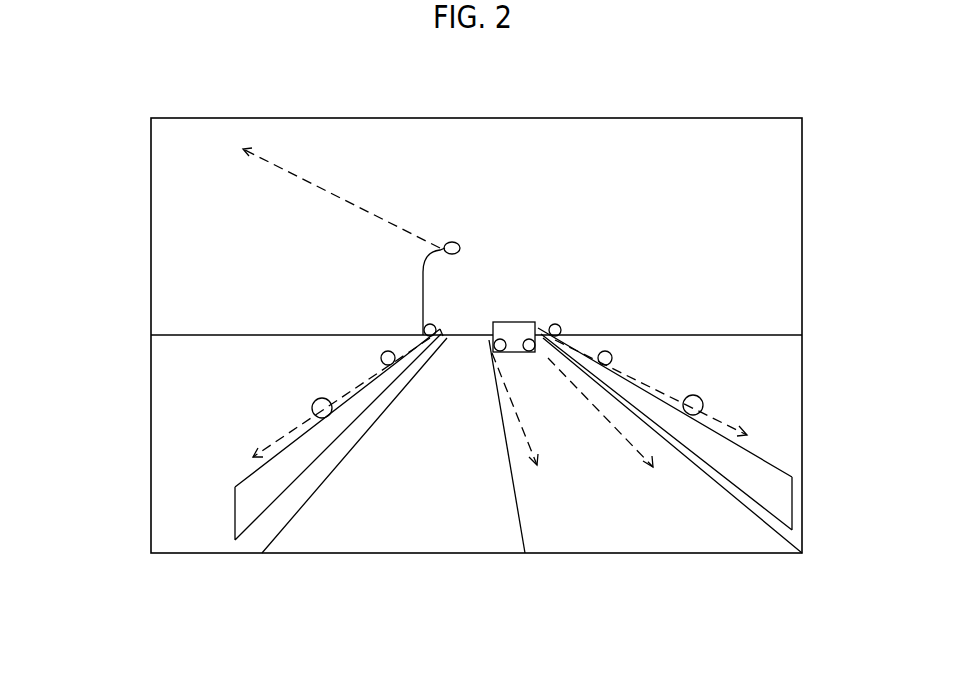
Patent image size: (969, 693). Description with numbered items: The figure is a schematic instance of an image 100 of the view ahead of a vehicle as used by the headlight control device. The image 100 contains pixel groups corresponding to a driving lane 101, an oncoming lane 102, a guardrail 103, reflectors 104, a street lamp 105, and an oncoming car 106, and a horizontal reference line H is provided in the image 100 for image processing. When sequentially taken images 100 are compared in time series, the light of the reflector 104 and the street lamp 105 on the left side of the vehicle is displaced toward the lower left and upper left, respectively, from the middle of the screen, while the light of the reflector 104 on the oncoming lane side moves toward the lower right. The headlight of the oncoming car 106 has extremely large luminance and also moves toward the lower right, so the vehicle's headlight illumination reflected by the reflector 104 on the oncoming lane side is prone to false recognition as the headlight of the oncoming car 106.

The image 100 is at (150, 92).
The driving lane 101 is at (382, 528).
The oncoming lane 102 is at (610, 526).
The guardrail 103 is at (740, 478).
The reflector 104 is at (605, 358).
The street lamp 105 is at (445, 246).
The oncoming car 106 is at (537, 328).
The horizontal reference line H is at (239, 335).